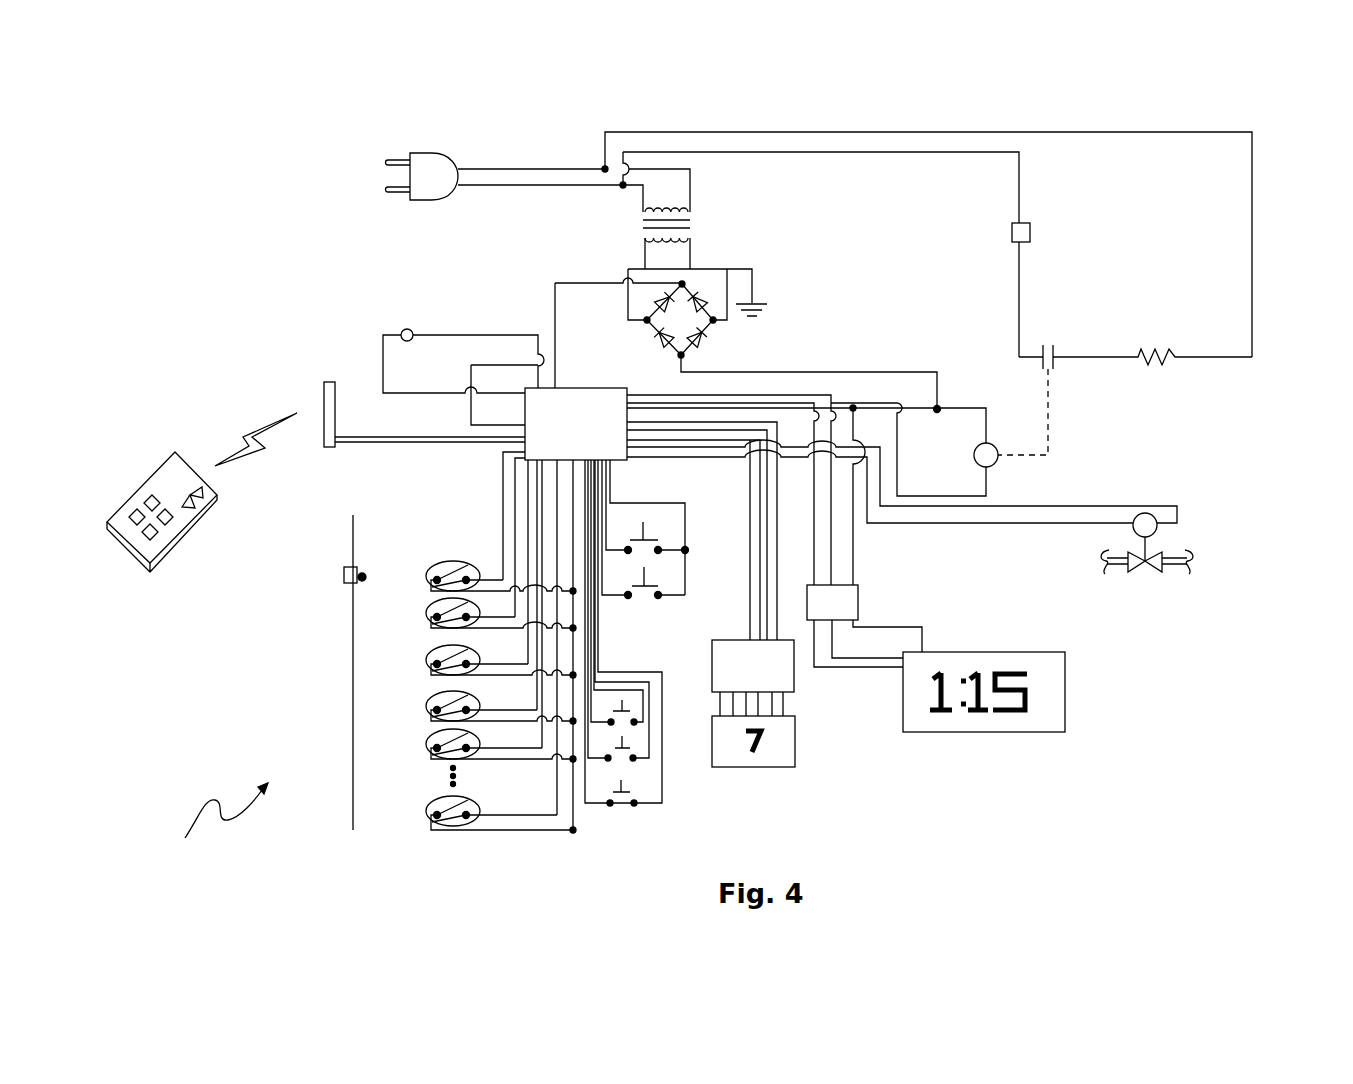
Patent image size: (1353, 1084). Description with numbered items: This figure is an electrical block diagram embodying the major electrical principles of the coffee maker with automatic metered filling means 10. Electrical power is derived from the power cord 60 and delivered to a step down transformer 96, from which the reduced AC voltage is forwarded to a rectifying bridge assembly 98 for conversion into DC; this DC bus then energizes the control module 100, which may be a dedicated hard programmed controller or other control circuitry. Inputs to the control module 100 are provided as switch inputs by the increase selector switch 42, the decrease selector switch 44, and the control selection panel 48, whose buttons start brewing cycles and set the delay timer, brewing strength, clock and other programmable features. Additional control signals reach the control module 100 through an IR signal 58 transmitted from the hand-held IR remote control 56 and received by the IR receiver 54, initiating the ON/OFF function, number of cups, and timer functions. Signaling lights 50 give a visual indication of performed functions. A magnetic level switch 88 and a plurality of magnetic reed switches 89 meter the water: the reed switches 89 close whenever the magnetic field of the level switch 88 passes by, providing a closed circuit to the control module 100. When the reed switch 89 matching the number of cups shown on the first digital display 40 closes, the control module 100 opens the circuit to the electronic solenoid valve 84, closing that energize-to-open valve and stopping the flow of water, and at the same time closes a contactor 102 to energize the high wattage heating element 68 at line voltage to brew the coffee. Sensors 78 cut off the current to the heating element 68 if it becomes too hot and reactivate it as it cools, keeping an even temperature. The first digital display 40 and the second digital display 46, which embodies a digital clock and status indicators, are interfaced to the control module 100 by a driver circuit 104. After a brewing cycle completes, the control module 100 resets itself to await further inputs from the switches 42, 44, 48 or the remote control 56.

The coffee maker with automatic metered filling means 10 is at (217, 822).
The first digital display 40 is at (749, 763).
The increase selector switch 42 is at (652, 534).
The decrease selector switch 44 is at (655, 575).
The second digital display 46 is at (1028, 717).
The control selection panel 48 is at (618, 812).
The signaling lights 50 is at (404, 330).
The IR receiver 54 is at (325, 386).
The IR remote control 56 is at (178, 543).
The IR signal 58 is at (251, 435).
The power cord 60 is at (438, 152).
The heating element 68 is at (1147, 345).
The sensors 78 is at (1012, 232).
The electronic solenoid valve 84 is at (1165, 545).
The magnetic level switch 88 is at (364, 570).
The magnetic reed switches 89 is at (453, 560).
The step down transformer 96 is at (692, 225).
The rectifying bridge assembly 98 is at (685, 326).
The control module 100 is at (572, 388).
The contactor 102 is at (990, 442).
The driver circuit 104 is at (858, 600).